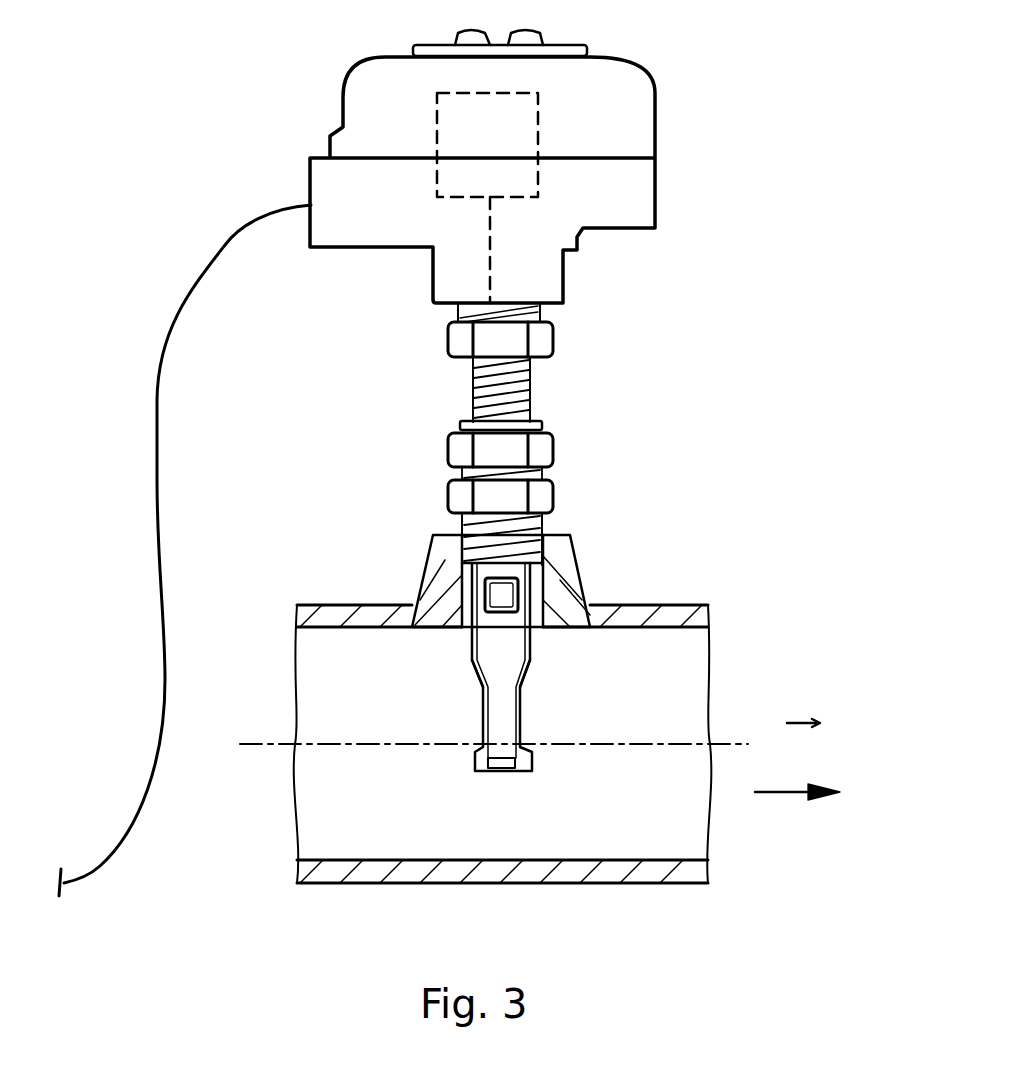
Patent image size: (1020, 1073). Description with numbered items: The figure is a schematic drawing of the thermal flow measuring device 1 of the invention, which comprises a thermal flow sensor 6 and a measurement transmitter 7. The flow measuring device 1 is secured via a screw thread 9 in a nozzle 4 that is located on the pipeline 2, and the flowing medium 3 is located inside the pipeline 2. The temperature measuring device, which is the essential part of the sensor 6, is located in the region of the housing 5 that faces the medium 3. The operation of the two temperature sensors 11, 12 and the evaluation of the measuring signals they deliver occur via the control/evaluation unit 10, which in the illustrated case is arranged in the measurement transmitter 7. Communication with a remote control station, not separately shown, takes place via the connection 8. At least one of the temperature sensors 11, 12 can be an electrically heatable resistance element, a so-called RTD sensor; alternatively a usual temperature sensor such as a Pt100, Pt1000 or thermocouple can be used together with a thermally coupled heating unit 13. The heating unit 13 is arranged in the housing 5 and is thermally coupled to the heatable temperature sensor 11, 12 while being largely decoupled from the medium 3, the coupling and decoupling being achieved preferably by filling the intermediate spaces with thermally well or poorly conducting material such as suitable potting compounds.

The flow measuring device 1 is at (683, 352).
The pipeline 2 is at (647, 613).
The flowing medium 3 is at (663, 820).
The nozzle 4 is at (547, 537).
The housing 5 is at (470, 650).
The thermal flow sensor 6 is at (500, 772).
The measurement transmitter 7 is at (655, 117).
The connection 8 is at (192, 265).
The screw thread 9 is at (470, 537).
The control/evaluation unit 10 is at (437, 117).
The temperature sensor 11 is at (483, 750).
The temperature sensor 12 is at (527, 750).
The heating unit 13 is at (507, 592).